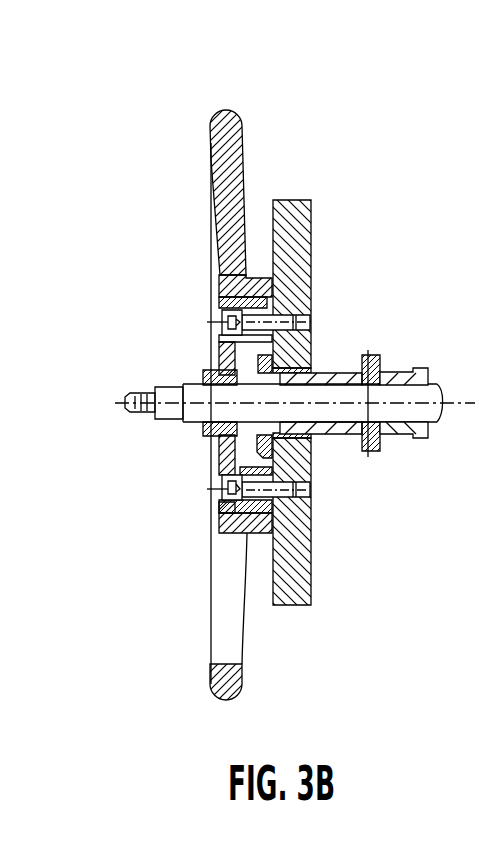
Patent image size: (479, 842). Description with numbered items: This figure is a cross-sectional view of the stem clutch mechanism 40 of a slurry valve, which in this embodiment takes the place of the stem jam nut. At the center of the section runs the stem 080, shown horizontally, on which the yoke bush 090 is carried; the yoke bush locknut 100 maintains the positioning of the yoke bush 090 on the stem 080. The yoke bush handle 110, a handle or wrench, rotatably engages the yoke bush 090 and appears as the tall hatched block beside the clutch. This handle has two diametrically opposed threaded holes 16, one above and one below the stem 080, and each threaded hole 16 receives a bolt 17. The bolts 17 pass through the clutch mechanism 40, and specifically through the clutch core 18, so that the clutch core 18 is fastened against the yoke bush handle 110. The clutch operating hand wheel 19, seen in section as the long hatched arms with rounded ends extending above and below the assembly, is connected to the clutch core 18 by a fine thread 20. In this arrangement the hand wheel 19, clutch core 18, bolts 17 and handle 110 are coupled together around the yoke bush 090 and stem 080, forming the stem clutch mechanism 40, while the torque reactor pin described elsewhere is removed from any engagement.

The stem clutch mechanism 40 is at (174, 104).
The yoke bush handle 110 is at (291, 217).
The bolts 17 is at (223, 311).
The threaded holes 16 is at (312, 321).
The stem 080 is at (196, 398).
The yoke bush 090 is at (333, 372).
The clutch core 18 is at (210, 434).
The yoke bush locknut 100 is at (270, 460).
The fine thread 20 is at (223, 536).
The clutch operating hand wheel 19 is at (232, 687).